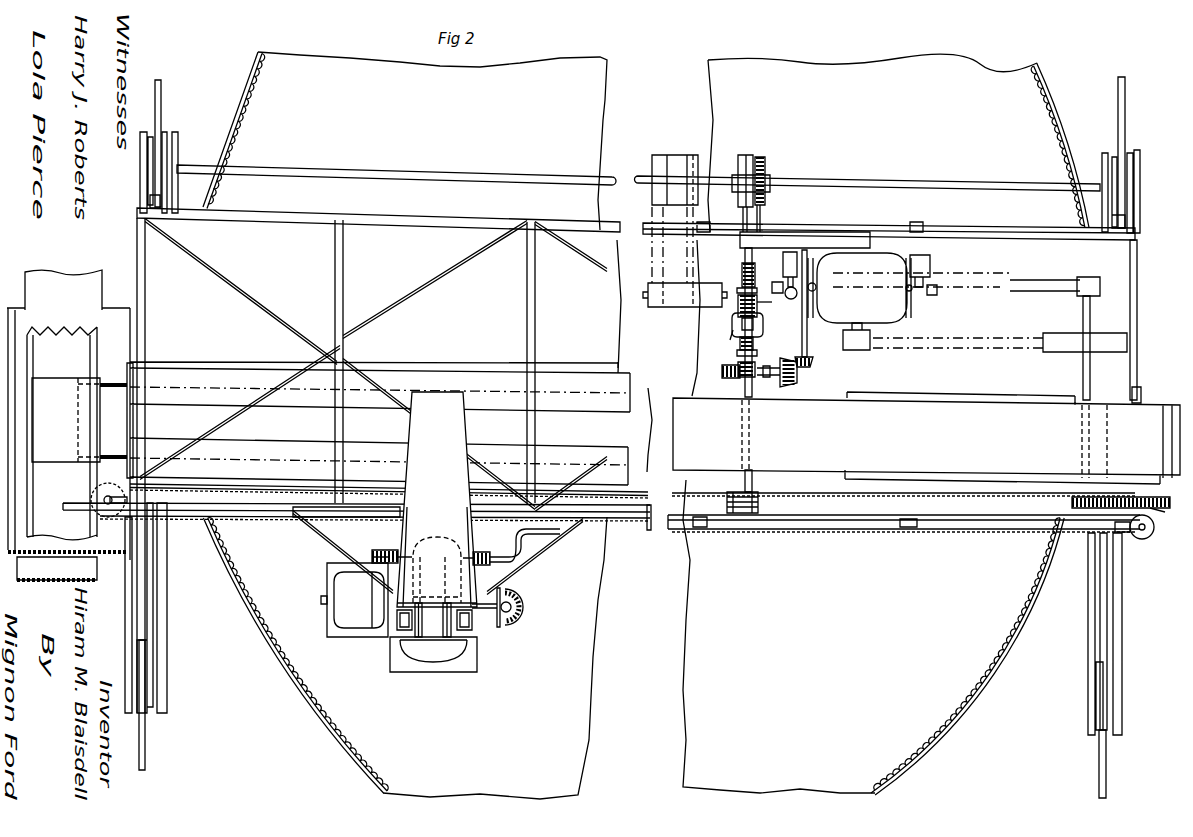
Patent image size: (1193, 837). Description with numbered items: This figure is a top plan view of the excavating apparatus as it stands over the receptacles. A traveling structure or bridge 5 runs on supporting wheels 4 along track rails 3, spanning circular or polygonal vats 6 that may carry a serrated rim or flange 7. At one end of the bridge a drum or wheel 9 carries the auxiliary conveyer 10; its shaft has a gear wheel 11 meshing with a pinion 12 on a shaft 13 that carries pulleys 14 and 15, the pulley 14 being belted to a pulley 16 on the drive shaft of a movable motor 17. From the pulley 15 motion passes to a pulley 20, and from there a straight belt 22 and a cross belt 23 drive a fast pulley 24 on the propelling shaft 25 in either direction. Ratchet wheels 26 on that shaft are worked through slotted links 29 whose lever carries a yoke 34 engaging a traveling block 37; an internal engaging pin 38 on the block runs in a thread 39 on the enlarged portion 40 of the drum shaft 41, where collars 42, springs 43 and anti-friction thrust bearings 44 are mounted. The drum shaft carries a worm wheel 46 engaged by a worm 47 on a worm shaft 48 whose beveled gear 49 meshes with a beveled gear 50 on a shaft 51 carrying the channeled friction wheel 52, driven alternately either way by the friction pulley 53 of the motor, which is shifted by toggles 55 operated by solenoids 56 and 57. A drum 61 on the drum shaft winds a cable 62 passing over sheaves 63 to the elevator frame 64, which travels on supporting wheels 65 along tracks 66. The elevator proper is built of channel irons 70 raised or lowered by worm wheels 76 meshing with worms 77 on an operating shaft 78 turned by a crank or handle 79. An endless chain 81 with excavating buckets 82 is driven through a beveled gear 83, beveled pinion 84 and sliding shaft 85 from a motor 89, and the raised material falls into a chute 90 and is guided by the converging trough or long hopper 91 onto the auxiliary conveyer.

The track rails 3 is at (163, 108).
The supporting wheels 4 is at (158, 157).
The traveling structure or bridge 5 is at (633, 460).
The vats 6 is at (647, 425).
The serrated rim or flange 7 is at (940, 725).
The drum or wheel 9 is at (118, 388).
The auxiliary conveyer 10 is at (387, 430).
The gear wheel 11 is at (1164, 508).
The pinion 12 is at (1072, 503).
The shaft 13 is at (1085, 390).
The pulley 14 is at (1098, 341).
The pulley 15 is at (1100, 285).
The pulley 16 is at (855, 350).
The movable motor 17 is at (909, 288).
The pulley 20 is at (685, 295).
The straight belt 22 is at (652, 252).
The cross belt 23 is at (692, 258).
The fast pulley 24 is at (677, 157).
The propelling shaft 25 is at (878, 163).
The ratchet wheels 26 is at (744, 158).
The slotted links 29 is at (757, 221).
The yoke 34 is at (757, 326).
The traveling block 37 is at (745, 334).
The internal engaging pin 38 is at (753, 341).
The thread 39 is at (768, 301).
The enlarged portion 40 is at (741, 305).
The drum shaft 41 is at (926, 438).
The collars 42 is at (743, 268).
The springs 43 is at (742, 278).
The anti-friction thrust bearings 44 is at (714, 356).
The worm wheel 46 is at (724, 380).
The worm 47 is at (768, 378).
The worm shaft 48 is at (754, 364).
The beveled gear 49 is at (797, 380).
The beveled gear 50 is at (813, 362).
The shaft 51 is at (804, 340).
The channeled friction wheel 52 is at (805, 240).
The friction pulley 53 is at (872, 232).
The toggles 55 is at (936, 303).
The solenoid 56 is at (784, 262).
The solenoid 57 is at (930, 265).
The drum 61 is at (763, 498).
The cable 62 is at (838, 514).
The sheaves 63 is at (1148, 542).
The elevator frame 64 is at (490, 622).
The supporting wheels 65 is at (560, 510).
The tracks 66 is at (628, 522).
The channel irons 70 is at (398, 630).
The worm wheels 76 is at (372, 556).
The worms 77 is at (384, 552).
The operating shaft 78 is at (527, 566).
The crank or handle 79 is at (525, 545).
The endless chain 81 is at (437, 587).
The excavating buckets 82 is at (433, 654).
The beveled gear 83 is at (512, 592).
The beveled pinion 84 is at (516, 605).
The sliding shaft 85 is at (516, 615).
The motor 89 is at (354, 600).
The chute 90 is at (437, 499).
The converging trough or long hopper 91 is at (380, 421).